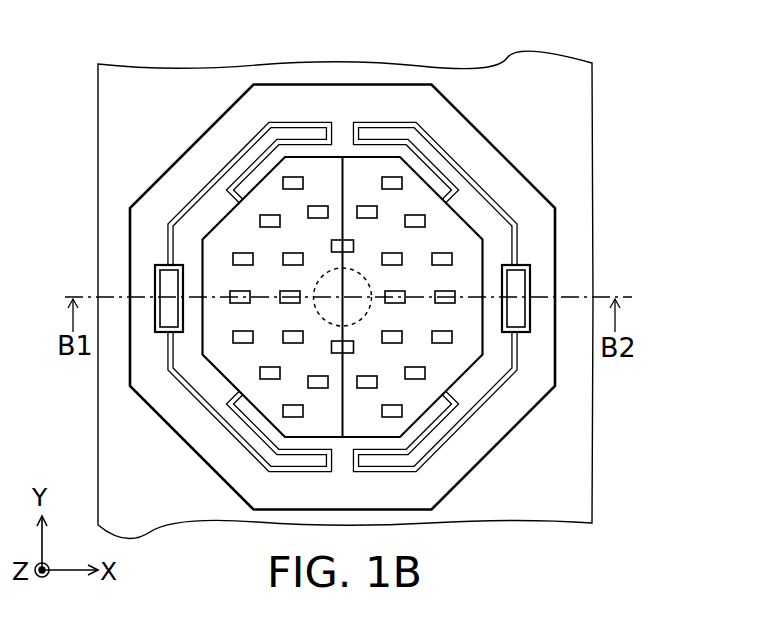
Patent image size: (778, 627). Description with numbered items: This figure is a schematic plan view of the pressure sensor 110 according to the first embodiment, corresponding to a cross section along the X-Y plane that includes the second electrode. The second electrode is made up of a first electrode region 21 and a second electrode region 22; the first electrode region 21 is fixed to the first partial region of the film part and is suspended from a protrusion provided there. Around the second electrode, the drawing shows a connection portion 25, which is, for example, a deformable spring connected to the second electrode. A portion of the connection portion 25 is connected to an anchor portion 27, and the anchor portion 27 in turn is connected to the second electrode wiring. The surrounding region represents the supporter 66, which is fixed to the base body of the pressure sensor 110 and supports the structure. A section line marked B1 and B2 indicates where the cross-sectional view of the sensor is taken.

The first electrode region 21 is at (342, 296).
The second electrode region 22 is at (412, 202).
The connection portion 25 is at (493, 200).
The anchor portion 27 is at (530, 280).
The supporter 66 is at (557, 440).
The pressure sensor 110 is at (618, 98).